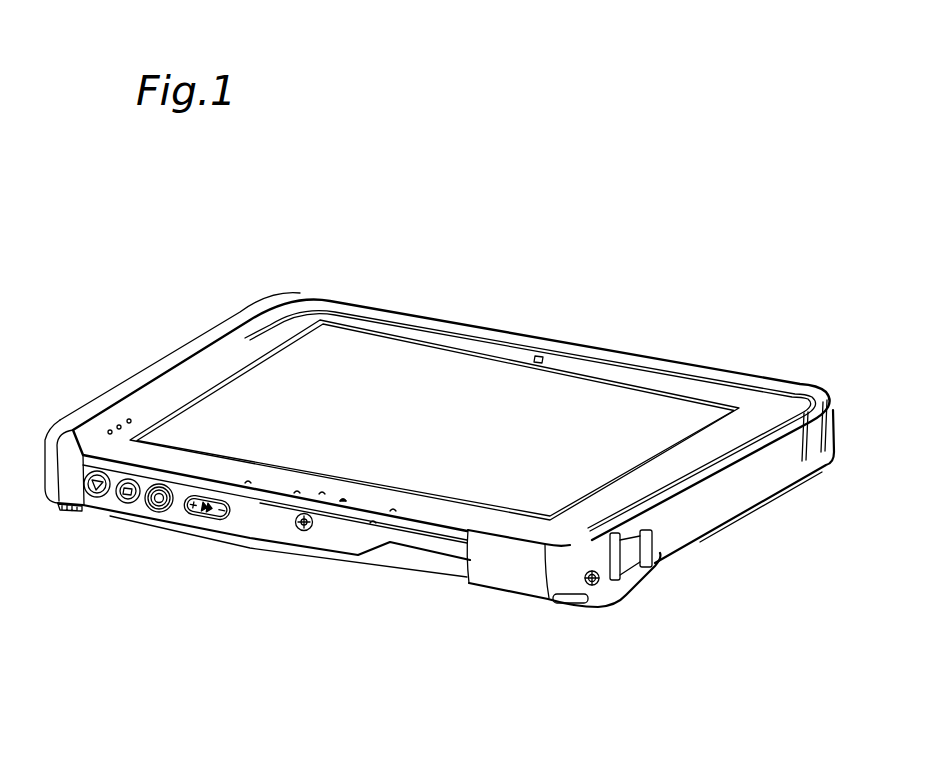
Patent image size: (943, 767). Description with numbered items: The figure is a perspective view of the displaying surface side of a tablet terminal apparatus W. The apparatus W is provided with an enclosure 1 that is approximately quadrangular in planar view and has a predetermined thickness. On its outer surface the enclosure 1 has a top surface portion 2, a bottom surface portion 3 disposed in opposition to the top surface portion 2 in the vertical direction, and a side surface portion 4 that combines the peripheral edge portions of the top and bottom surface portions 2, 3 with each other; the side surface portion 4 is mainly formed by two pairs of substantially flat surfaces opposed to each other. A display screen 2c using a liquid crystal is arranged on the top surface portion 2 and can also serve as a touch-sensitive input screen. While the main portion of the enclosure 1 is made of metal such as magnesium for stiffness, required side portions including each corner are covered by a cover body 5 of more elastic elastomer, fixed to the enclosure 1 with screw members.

The tablet terminal apparatus W is at (375, 270).
The enclosure 1 is at (384, 559).
The top surface portion 2 is at (599, 374).
The display screen 2c is at (409, 382).
The bottom surface portion 3 is at (433, 582).
The side surface portion 4 is at (172, 352).
The cover body 5 is at (292, 292).